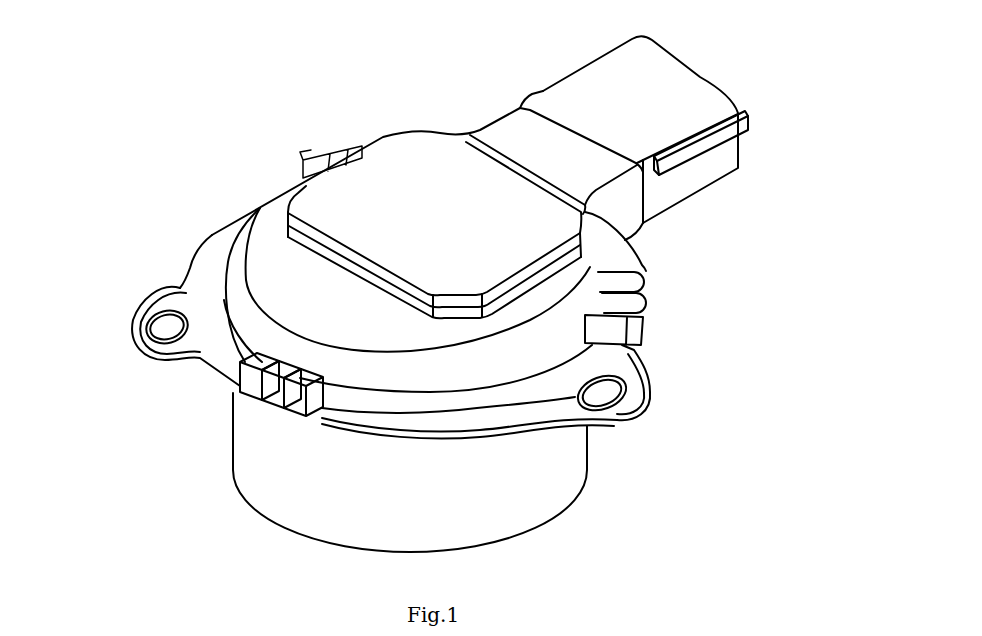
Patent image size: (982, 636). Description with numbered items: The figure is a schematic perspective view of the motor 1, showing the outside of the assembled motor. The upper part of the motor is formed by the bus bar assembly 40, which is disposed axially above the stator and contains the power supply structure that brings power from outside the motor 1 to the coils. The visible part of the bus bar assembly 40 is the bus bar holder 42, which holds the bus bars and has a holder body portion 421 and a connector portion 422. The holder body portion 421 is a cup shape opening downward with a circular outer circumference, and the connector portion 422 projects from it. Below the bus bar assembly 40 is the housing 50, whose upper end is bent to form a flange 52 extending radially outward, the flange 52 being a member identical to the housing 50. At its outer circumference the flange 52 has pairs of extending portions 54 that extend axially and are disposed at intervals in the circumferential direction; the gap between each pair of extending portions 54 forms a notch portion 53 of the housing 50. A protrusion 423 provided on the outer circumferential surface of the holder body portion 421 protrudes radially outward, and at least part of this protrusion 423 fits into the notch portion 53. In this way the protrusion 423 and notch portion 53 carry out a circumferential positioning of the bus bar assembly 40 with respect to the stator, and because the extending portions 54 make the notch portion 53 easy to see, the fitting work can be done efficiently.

The motor 1 is at (266, 100).
The bus bar assembly 40 is at (256, 202).
The bus bar holder 42 is at (253, 300).
The housing 50 is at (528, 483).
The flange 52 is at (205, 327).
The notch portion 53 is at (262, 357).
The extending portion 54 is at (290, 398).
The holder body portion 421 is at (517, 358).
The connector portion 422 is at (653, 110).
The protrusion 423 is at (313, 392).